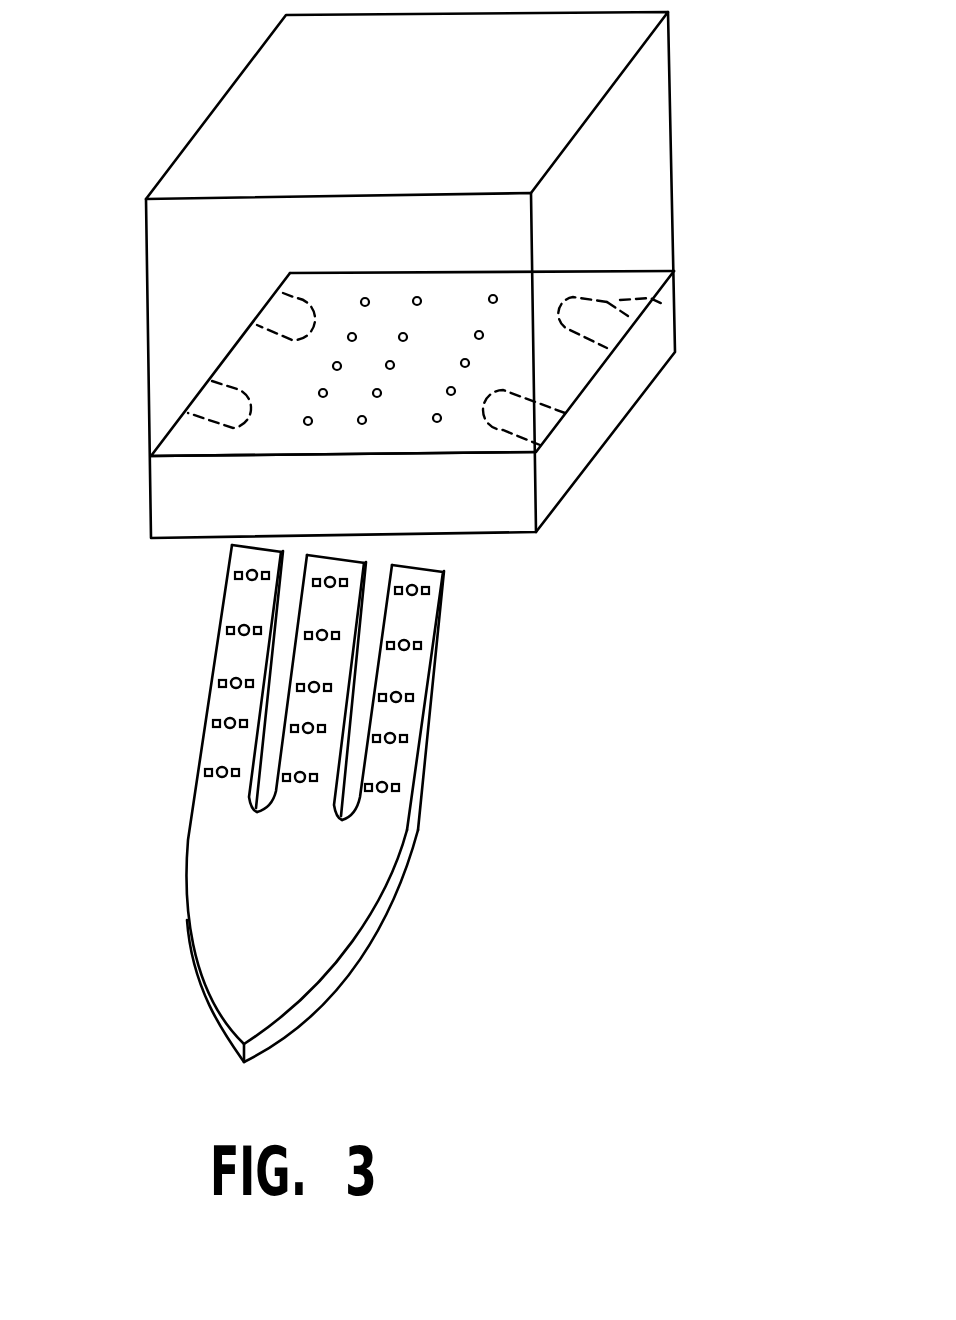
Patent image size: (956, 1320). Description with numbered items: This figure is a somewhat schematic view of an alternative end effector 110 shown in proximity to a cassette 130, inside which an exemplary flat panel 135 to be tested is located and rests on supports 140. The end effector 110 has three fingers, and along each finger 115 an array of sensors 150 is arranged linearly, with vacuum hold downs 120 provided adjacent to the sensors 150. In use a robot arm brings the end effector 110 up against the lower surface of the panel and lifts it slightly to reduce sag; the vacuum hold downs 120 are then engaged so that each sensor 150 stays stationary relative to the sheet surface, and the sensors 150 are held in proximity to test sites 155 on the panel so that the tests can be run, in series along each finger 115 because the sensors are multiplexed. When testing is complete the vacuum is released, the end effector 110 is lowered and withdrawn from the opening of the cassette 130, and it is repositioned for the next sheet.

The end effector 110 is at (358, 948).
The finger 115 is at (445, 610).
The vacuum hold downs 120 is at (424, 645).
The cassette 130 is at (670, 138).
The flat panel 135 is at (198, 457).
The supports 140 is at (672, 311).
The sensors 150 is at (413, 589).
The test sites 155 is at (493, 298).